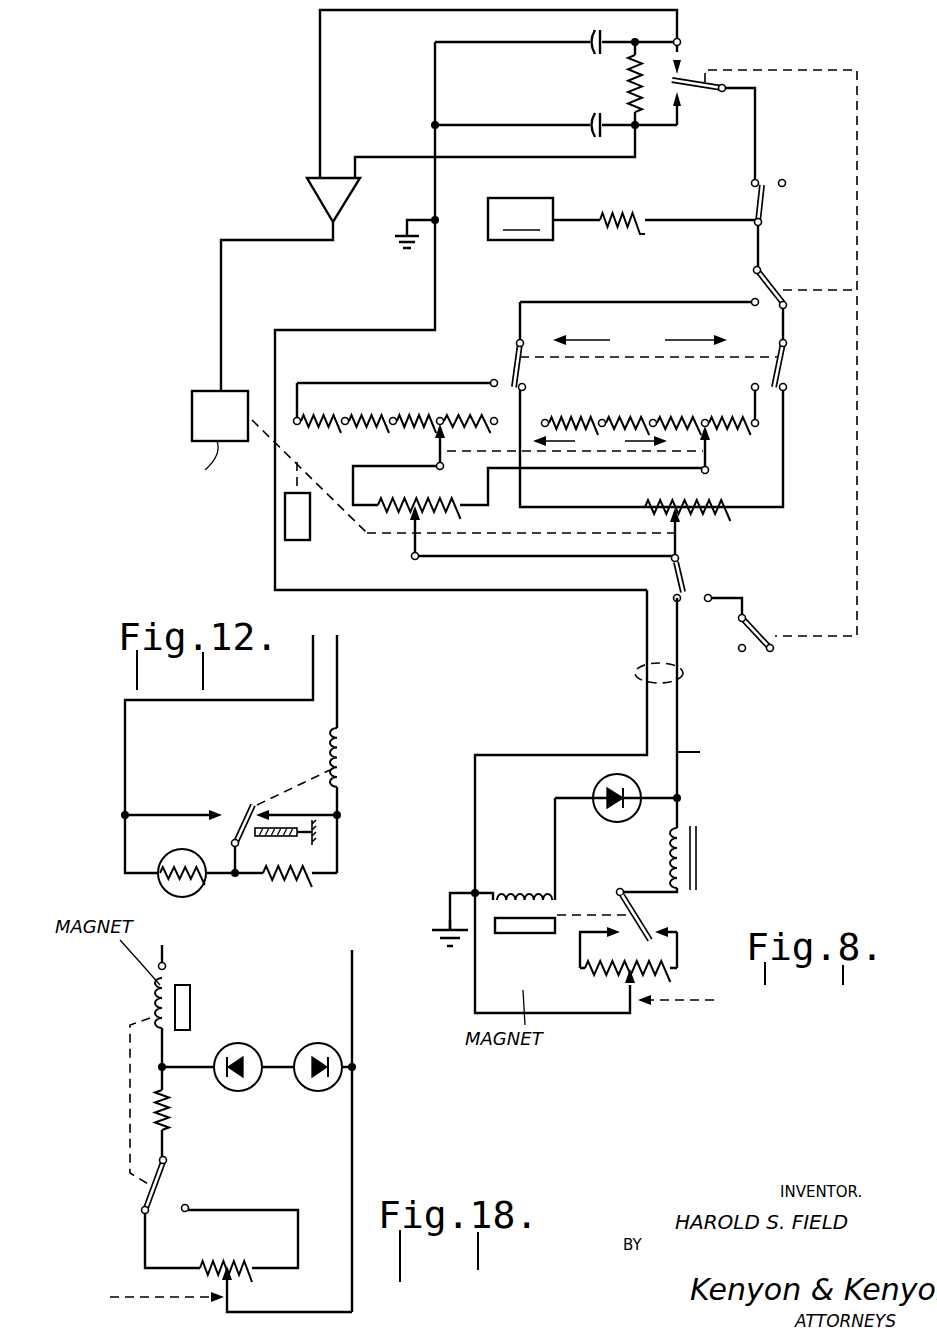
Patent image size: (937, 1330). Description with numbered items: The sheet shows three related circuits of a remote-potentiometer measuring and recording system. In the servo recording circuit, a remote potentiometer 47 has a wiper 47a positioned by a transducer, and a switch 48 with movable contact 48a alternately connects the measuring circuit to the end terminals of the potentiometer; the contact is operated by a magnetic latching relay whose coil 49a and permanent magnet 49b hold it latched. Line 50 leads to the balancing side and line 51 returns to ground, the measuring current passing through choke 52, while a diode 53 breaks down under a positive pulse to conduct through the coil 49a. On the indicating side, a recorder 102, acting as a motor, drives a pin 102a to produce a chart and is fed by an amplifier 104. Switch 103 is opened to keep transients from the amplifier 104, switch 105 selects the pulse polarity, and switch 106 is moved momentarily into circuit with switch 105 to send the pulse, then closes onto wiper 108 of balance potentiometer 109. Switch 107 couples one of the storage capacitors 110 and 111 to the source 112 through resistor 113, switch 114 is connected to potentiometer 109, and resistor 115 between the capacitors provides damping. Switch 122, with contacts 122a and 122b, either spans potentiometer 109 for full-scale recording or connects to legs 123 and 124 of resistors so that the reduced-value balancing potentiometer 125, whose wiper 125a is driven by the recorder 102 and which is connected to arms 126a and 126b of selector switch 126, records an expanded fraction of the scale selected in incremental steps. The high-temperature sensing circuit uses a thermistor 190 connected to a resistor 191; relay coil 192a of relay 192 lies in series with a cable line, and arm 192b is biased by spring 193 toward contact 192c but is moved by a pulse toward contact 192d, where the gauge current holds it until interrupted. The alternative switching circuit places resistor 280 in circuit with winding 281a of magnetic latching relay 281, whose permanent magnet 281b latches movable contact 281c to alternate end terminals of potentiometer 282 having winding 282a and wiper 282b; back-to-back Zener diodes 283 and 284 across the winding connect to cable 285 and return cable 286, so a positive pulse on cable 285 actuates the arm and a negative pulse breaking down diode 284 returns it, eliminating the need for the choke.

In FIG. 12, the recorder 102 is at (193, 395).
In FIG. 12, the pin 102a is at (298, 530).
In FIG. 12, the switch 103 is at (765, 203).
In FIG. 12, the amplifier 104 is at (305, 190).
In FIG. 12, the switch 105 is at (756, 634).
In FIG. 12, the switch 106 is at (688, 578).
In FIG. 12, the switch 107 is at (692, 78).
In FIG. 12, the wiper 108 is at (678, 542).
In FIG. 12, the balance potentiometer 109 is at (700, 495).
In FIG. 12, the capacitor 110 is at (589, 46).
In FIG. 12, the capacitor 111 is at (589, 122).
In FIG. 12, the source 112 is at (534, 235).
In FIG. 12, the resistor 113 is at (640, 213).
In FIG. 12, the switch 114 is at (768, 290).
In FIG. 12, the resistor 115 is at (630, 90).
In FIG. 12, the switch 122 is at (640, 339).
In FIG. 12, the contact 122a is at (514, 366).
In FIG. 12, the contact 122b is at (781, 378).
In FIG. 12, the leg of resistors 123 is at (388, 416).
In FIG. 12, the leg of resistors 124 is at (678, 395).
In FIG. 12, the balancing potentiometer 125 is at (425, 498).
In FIG. 12, the wiper 125a is at (412, 550).
In FIG. 12, the selector switch 126 is at (600, 444).
In FIG. 12, the arm 126a is at (435, 447).
In FIG. 12, the arm 126b is at (715, 455).
In FIG. 12, the thermistor 190 is at (192, 894).
In FIG. 12, the resistor 191 is at (290, 885).
In FIG. 12, the relay 192 is at (280, 786).
In FIG. 12, the relay coil 192a is at (345, 752).
In FIG. 12, the arm 192b is at (238, 828).
In FIG. 12, the contact 192c is at (273, 812).
In FIG. 12, the contact 192d is at (215, 810).
In FIG. 12, the spring 193 is at (264, 840).
In FIG. 8, the remote potentiometer 47 is at (665, 972).
In FIG. 8, the wiper 47a is at (624, 985).
In FIG. 8, the switch 48 is at (662, 921).
In FIG. 8, the movable contact 48a is at (606, 900).
In FIG. 8, the coil 49a is at (522, 896).
In FIG. 8, the permanent magnet 49b is at (518, 935).
In FIG. 8, the line 50 is at (706, 754).
In FIG. 8, the line 51 is at (468, 892).
In FIG. 8, the choke 52 is at (698, 824).
In FIG. 8, the diode 53 is at (594, 783).
In FIG. 18, the resistor 280 is at (175, 1120).
In FIG. 18, the magnetic latching relay 281 is at (108, 1053).
In FIG. 18, the winding 281a is at (154, 989).
In FIG. 18, the permanent magnet 281b is at (192, 1000).
In FIG. 18, the movable contact 281c is at (166, 1180).
In FIG. 18, the potentiometer 282 is at (270, 1250).
In FIG. 18, the winding 282a is at (207, 1262).
In FIG. 18, the wiper 282b is at (232, 1293).
In FIG. 18, the Zener diode 283 is at (262, 1040).
In FIG. 18, the Zener diode 284 is at (314, 1046).
In FIG. 18, the cable 285 is at (168, 956).
In FIG. 18, the return cable 286 is at (355, 990).